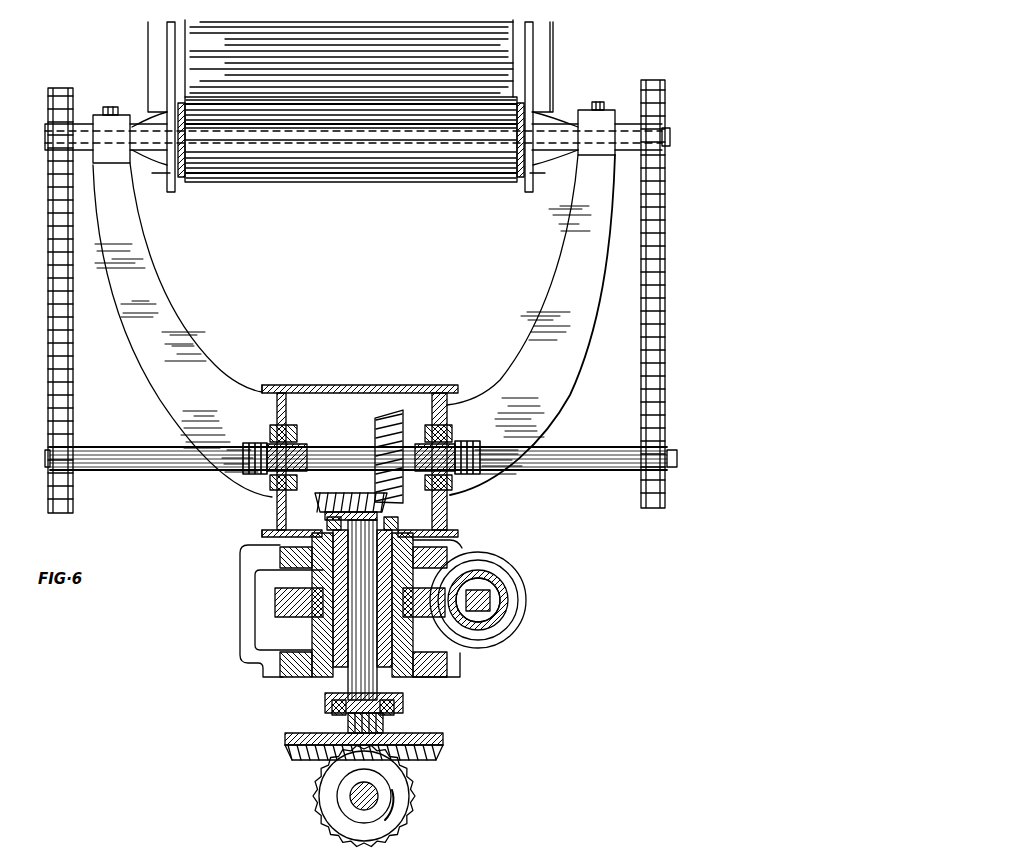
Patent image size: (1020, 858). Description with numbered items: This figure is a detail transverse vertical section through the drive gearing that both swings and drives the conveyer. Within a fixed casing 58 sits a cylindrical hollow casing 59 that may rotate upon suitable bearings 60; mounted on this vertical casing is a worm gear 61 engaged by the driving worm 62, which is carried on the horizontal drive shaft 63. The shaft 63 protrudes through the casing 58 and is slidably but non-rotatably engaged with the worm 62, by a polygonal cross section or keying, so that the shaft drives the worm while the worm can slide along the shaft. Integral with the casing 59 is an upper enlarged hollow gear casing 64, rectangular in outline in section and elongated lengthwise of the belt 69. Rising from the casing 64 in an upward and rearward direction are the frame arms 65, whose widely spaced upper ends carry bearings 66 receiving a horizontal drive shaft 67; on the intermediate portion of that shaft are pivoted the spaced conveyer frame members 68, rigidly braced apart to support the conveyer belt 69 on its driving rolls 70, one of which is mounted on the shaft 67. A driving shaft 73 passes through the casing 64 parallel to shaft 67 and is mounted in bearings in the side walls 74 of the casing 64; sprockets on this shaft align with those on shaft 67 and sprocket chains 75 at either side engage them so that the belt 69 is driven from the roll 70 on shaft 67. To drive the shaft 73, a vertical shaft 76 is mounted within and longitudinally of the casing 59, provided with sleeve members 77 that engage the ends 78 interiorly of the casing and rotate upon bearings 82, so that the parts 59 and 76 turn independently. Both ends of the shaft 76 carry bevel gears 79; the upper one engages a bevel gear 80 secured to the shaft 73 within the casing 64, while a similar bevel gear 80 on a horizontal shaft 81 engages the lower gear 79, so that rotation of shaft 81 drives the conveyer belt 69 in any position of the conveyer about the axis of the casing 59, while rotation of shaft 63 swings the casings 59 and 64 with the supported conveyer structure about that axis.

The fixed casing 58 is at (257, 623).
The cylindrical hollow casing 59 is at (323, 647).
The bearings 60 is at (287, 553).
The worm gear 61 is at (290, 593).
The driving worm 62 is at (502, 605).
The horizontal drive shaft 63 is at (492, 592).
The gear casing 64 is at (366, 385).
The frame arms 65 is at (146, 286).
The bearings 66 is at (613, 121).
The horizontal drive shaft 67 is at (105, 127).
The conveyer frame members 68 is at (545, 49).
The conveyer belt 69 is at (351, 101).
The driving rolls 70 is at (185, 100).
The driving shaft 73 is at (578, 447).
The side walls 74 is at (285, 414).
The sprocket chains 75 is at (657, 313).
The vertical shaft 76 is at (367, 638).
The sleeve members 77 is at (387, 720).
The ends 78 is at (402, 702).
The bevel gears 79 is at (330, 498).
The bevel gear 80 is at (387, 430).
The horizontal shaft 81 is at (350, 797).
The bearings 82 is at (327, 523).